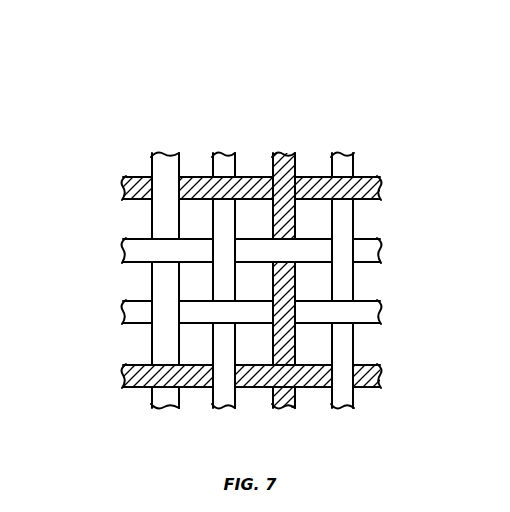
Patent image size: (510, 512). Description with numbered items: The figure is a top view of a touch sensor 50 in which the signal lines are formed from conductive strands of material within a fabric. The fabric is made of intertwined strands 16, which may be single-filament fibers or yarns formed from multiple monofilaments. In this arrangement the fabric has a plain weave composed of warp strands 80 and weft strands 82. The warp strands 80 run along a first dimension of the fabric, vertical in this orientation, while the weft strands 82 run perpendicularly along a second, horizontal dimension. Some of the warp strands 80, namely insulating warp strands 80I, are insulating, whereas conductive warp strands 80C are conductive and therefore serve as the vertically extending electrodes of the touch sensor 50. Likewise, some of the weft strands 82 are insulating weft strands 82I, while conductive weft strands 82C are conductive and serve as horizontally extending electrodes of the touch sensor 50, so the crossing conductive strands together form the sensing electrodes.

The touch sensor 50 is at (383, 66).
The warp strands 80 is at (362, 127).
The conductive warp strands 80C is at (297, 170).
The insulating warp strands 80I is at (347, 218).
The weft strands 82 is at (103, 173).
The conductive weft strands 82C is at (135, 377).
The insulating weft strands 82I is at (365, 313).
The strands 16 is at (286, 403).